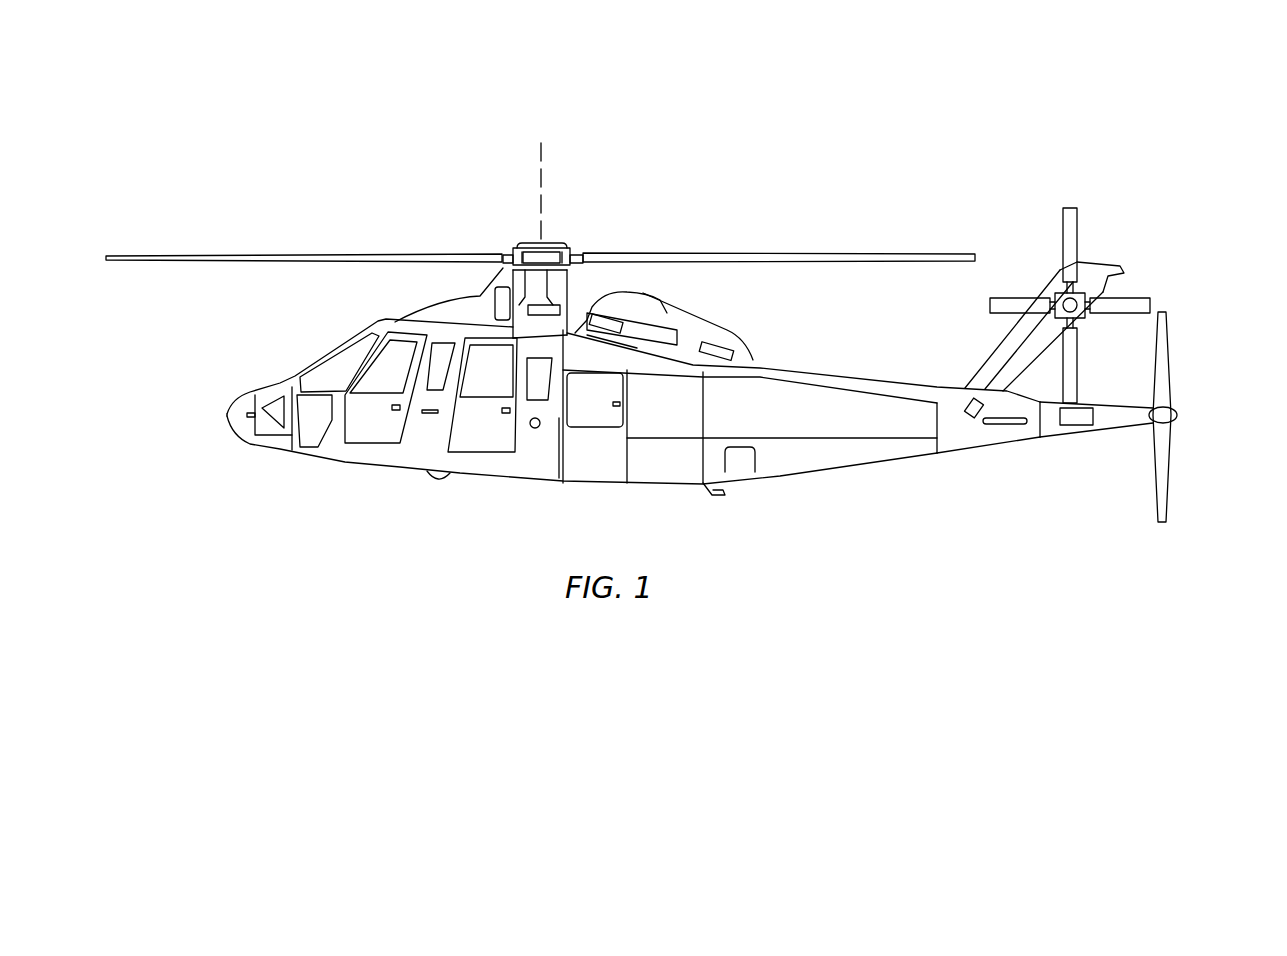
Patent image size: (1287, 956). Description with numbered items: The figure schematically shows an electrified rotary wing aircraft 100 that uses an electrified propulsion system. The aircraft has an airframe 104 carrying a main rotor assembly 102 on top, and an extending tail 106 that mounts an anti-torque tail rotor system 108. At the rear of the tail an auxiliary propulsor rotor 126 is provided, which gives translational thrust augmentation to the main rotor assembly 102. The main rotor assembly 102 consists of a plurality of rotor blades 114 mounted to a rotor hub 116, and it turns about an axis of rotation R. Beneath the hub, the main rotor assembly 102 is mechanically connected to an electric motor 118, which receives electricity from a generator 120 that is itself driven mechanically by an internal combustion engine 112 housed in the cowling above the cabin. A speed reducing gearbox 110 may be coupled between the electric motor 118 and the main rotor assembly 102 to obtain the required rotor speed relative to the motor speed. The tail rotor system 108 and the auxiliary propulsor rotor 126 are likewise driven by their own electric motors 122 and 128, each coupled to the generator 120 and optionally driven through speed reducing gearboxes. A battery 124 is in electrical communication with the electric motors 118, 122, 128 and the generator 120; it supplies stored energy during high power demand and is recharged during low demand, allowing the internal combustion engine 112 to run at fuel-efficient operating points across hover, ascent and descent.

The electrified rotary wing aircraft 100 is at (633, 150).
The main rotor assembly 102 is at (530, 243).
The airframe 104 is at (355, 450).
The extending tail 106 is at (893, 452).
The tail rotor system 108 is at (1087, 228).
The speed reducing gearbox 110 is at (493, 294).
The internal combustion engine 112 is at (663, 302).
The rotor blades 114 is at (693, 253).
The rotor hub 116 is at (555, 240).
The electric motor 118 is at (535, 306).
The generator 120 is at (612, 322).
The electric motor 122 is at (1080, 287).
The battery 124 is at (728, 348).
The auxiliary propulsor rotor 126 is at (1175, 487).
The electric motor 128 is at (1080, 425).